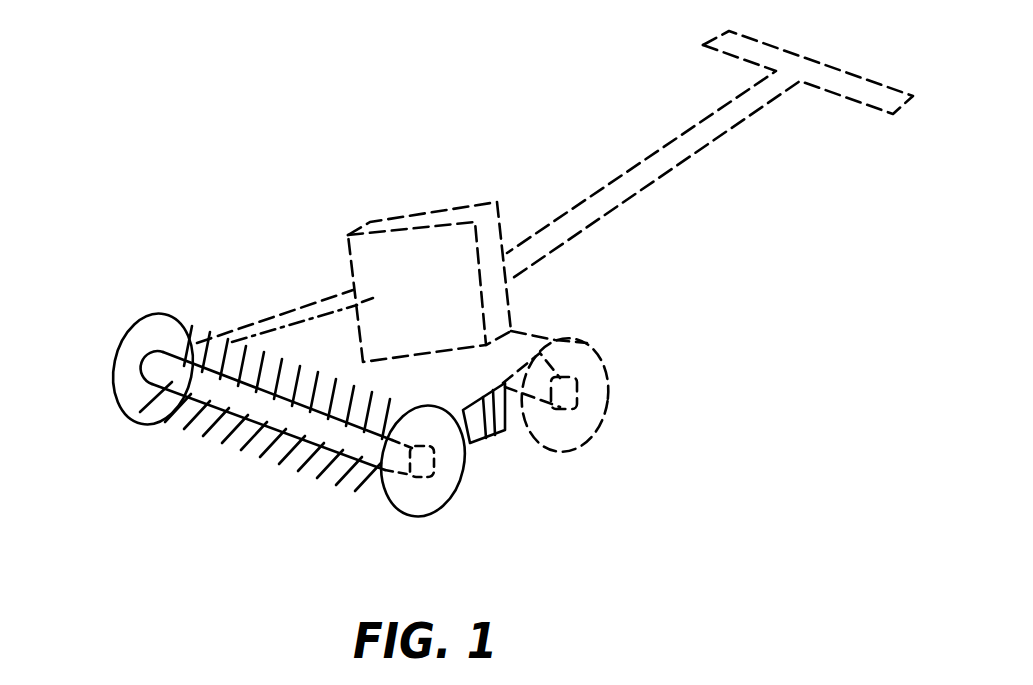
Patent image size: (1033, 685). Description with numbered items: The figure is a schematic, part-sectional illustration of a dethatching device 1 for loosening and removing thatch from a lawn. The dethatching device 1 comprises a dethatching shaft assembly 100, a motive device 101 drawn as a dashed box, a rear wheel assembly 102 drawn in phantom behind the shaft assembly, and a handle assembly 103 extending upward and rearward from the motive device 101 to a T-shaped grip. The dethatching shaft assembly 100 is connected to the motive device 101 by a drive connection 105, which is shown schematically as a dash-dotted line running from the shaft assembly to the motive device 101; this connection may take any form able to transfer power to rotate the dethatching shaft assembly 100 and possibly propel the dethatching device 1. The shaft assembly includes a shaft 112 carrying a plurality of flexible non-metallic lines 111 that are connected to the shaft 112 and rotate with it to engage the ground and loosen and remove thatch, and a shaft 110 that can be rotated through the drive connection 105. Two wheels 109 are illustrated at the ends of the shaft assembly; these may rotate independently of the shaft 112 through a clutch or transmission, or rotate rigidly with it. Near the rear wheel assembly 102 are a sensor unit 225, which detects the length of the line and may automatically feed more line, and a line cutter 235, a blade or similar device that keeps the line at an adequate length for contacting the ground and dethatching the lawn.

The dethatching device 1 is at (205, 175).
The dethatching shaft assembly 100 is at (118, 506).
The motive device 101 is at (437, 298).
The rear wheel assembly 102 is at (606, 372).
The handle assembly 103 is at (657, 182).
The drive connection 105 is at (262, 326).
The wheel 109 is at (130, 340).
The shaft 110 is at (298, 467).
The flexible non-metallic lines 111 is at (202, 430).
The shaft 112 is at (360, 480).
The sensor unit 225 is at (508, 433).
The line cutter 235 is at (490, 440).